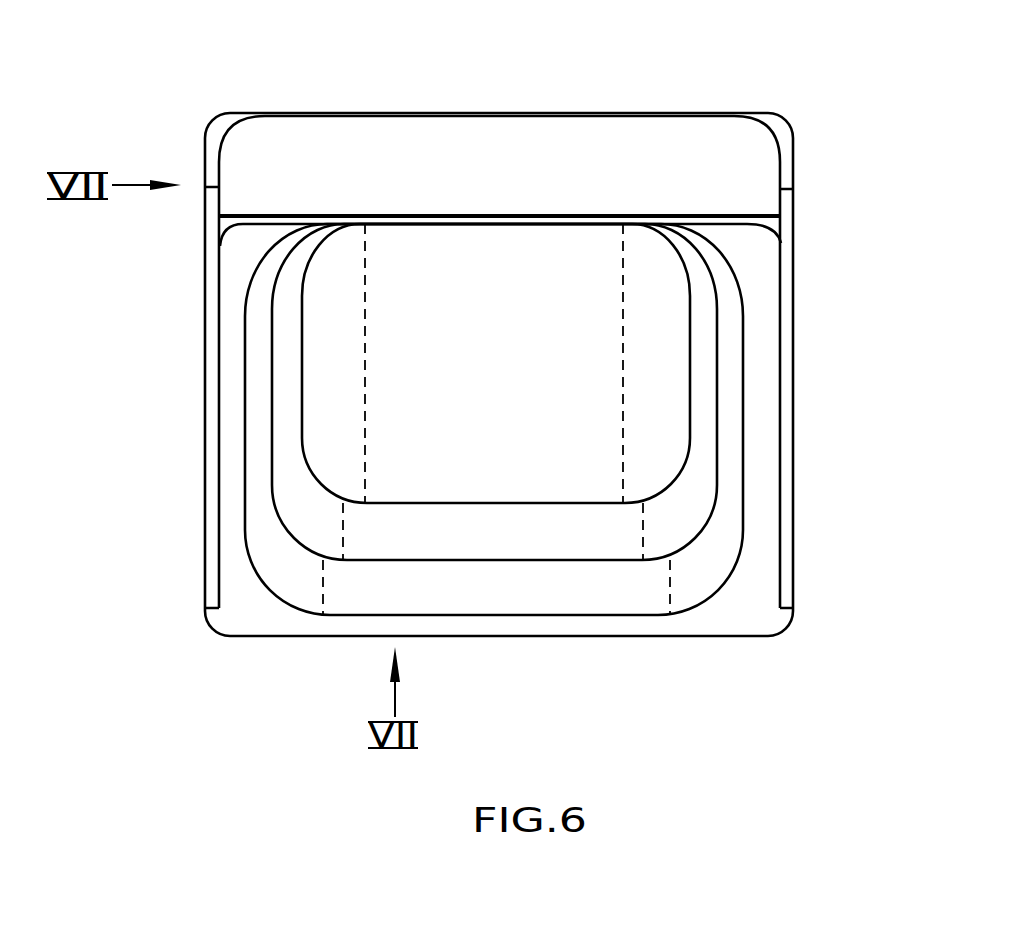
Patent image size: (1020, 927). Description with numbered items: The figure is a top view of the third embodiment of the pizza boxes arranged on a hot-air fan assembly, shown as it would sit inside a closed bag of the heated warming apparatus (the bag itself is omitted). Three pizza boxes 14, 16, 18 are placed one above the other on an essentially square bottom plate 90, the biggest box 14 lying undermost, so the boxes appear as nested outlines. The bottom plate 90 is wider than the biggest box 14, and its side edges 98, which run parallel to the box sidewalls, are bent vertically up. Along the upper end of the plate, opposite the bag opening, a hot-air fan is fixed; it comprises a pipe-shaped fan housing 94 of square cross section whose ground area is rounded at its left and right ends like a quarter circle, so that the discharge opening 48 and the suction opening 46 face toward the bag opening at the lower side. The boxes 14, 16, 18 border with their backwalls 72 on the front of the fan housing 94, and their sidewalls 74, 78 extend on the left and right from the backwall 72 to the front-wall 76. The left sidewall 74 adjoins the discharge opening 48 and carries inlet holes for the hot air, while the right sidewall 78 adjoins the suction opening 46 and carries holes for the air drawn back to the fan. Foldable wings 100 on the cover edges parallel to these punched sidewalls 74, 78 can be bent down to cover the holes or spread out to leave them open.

The pizza box 14 is at (495, 606).
The pizza box 16 is at (495, 548).
The pizza box 18 is at (497, 357).
The suction opening 46 is at (781, 243).
The discharge opening 48 is at (220, 246).
The backwall 72 is at (478, 226).
The sidewall 74 is at (366, 345).
The front-wall 76 is at (408, 507).
The sidewall 78 is at (622, 414).
The bottom plate 90 is at (765, 113).
The fan housing 94 is at (497, 168).
The side edges 98 is at (202, 516).
The foldable wings 100 is at (302, 345).